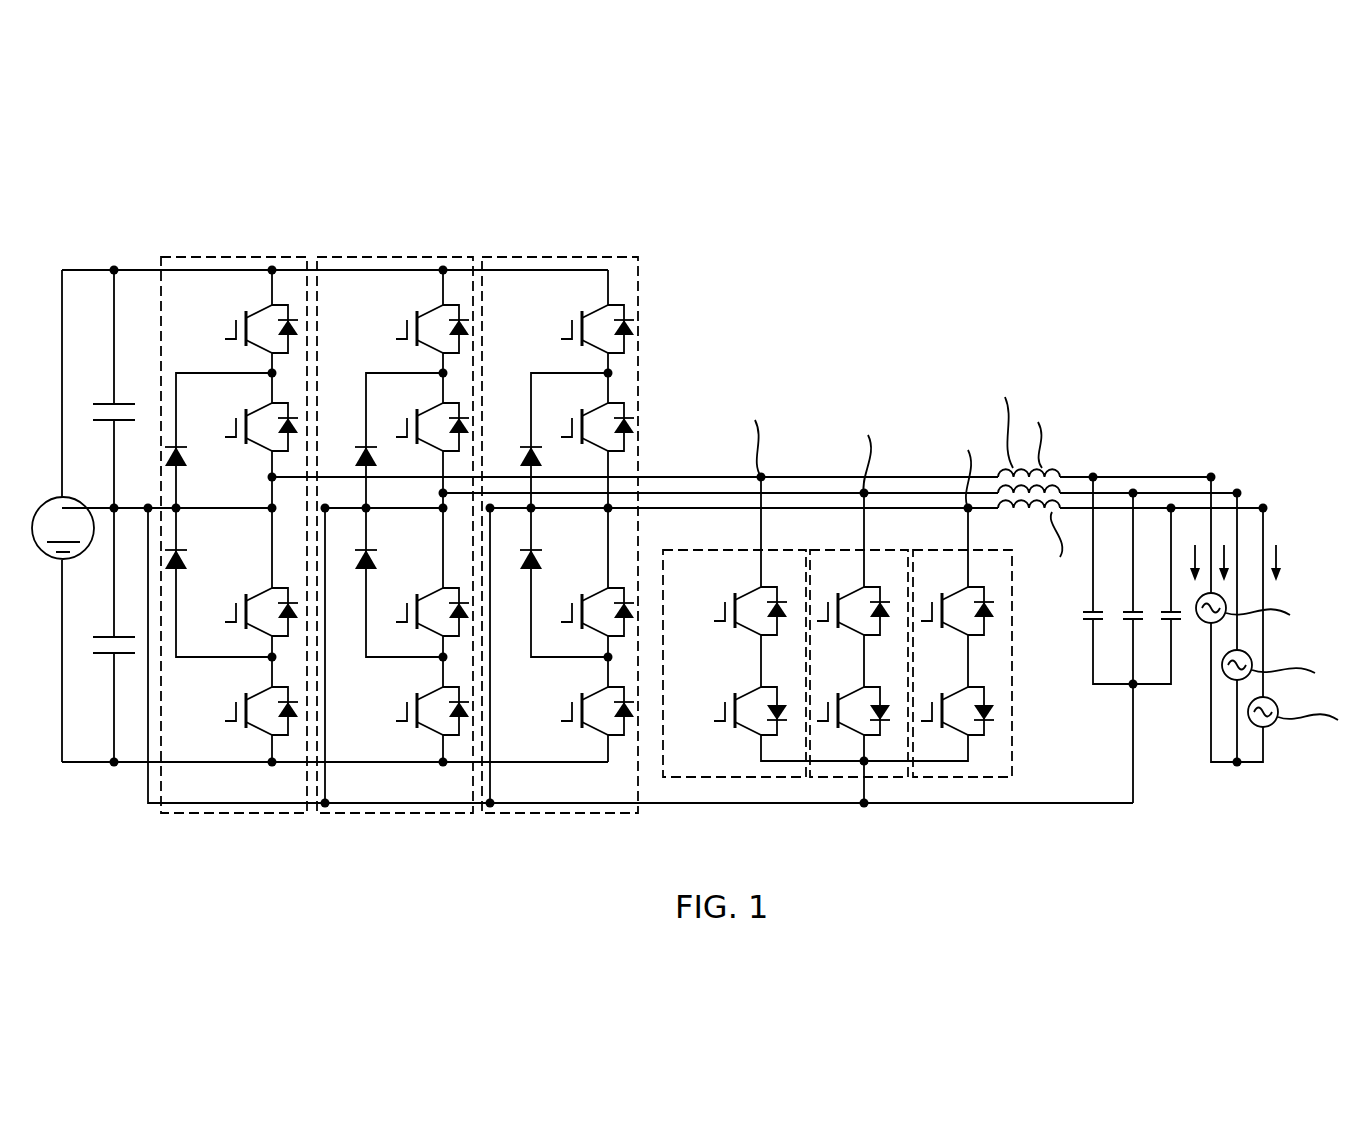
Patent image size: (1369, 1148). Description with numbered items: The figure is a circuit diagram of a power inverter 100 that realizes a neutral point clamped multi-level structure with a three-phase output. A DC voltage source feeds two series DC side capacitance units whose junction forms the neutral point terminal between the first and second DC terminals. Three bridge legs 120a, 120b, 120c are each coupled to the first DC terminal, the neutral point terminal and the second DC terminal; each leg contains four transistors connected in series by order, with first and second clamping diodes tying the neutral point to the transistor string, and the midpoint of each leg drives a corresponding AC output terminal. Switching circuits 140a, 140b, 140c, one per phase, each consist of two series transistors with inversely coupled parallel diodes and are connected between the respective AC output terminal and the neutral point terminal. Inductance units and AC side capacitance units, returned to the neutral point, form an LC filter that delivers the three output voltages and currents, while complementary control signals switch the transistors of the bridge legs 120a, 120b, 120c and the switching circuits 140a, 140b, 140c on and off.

The power inverter 100 is at (1322, 116).
The bridge leg 120a is at (280, 255).
The bridge leg 120b is at (447, 255).
The bridge leg 120c is at (615, 255).
The switching circuit 140a is at (737, 777).
The switching circuit 140b is at (832, 777).
The switching circuit 140c is at (955, 777).